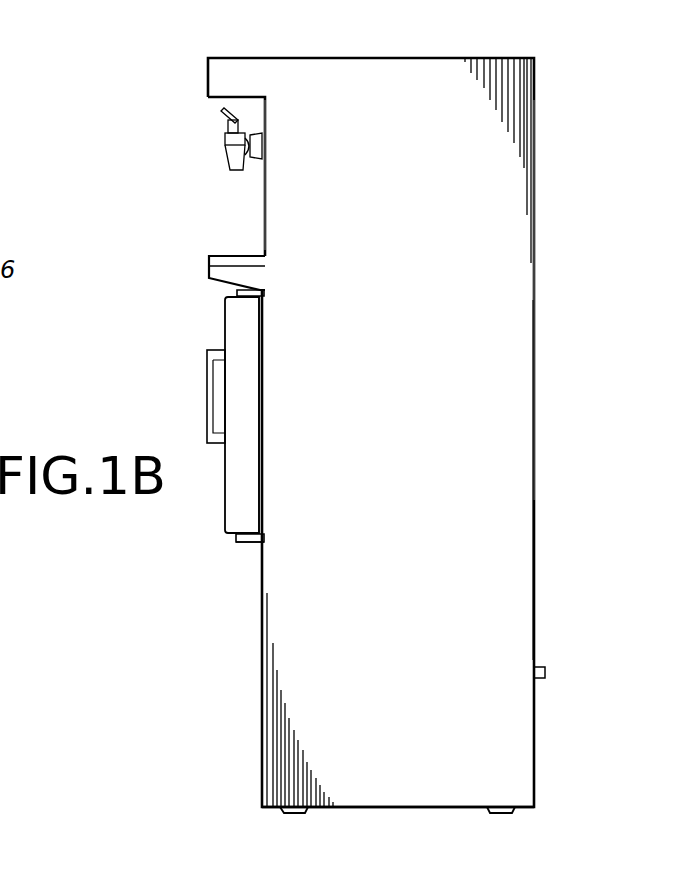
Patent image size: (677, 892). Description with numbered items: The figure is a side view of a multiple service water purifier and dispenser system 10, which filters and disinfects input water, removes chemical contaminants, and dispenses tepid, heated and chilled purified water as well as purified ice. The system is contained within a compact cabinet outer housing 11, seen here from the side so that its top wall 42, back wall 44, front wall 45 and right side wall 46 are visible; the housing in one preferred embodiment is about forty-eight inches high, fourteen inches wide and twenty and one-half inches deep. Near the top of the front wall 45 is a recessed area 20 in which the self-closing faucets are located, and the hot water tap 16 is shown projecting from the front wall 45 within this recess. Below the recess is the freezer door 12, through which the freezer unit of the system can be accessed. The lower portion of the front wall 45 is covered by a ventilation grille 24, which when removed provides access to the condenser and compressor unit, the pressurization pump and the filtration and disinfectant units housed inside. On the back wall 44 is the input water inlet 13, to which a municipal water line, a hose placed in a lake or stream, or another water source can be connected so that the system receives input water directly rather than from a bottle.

The multiple service water purifier and dispenser system 10 is at (186, 105).
The cabinet outer housing 11 is at (260, 797).
The freezer door 12 is at (240, 369).
The input water inlet 13 is at (545, 667).
The hot water tap 16 is at (225, 150).
The recessed area 20 is at (262, 206).
The ventilation grille 24 is at (262, 660).
The top wall 42 is at (484, 57).
The back wall 44 is at (535, 470).
The front wall 45 is at (262, 553).
The right side wall 46 is at (440, 315).